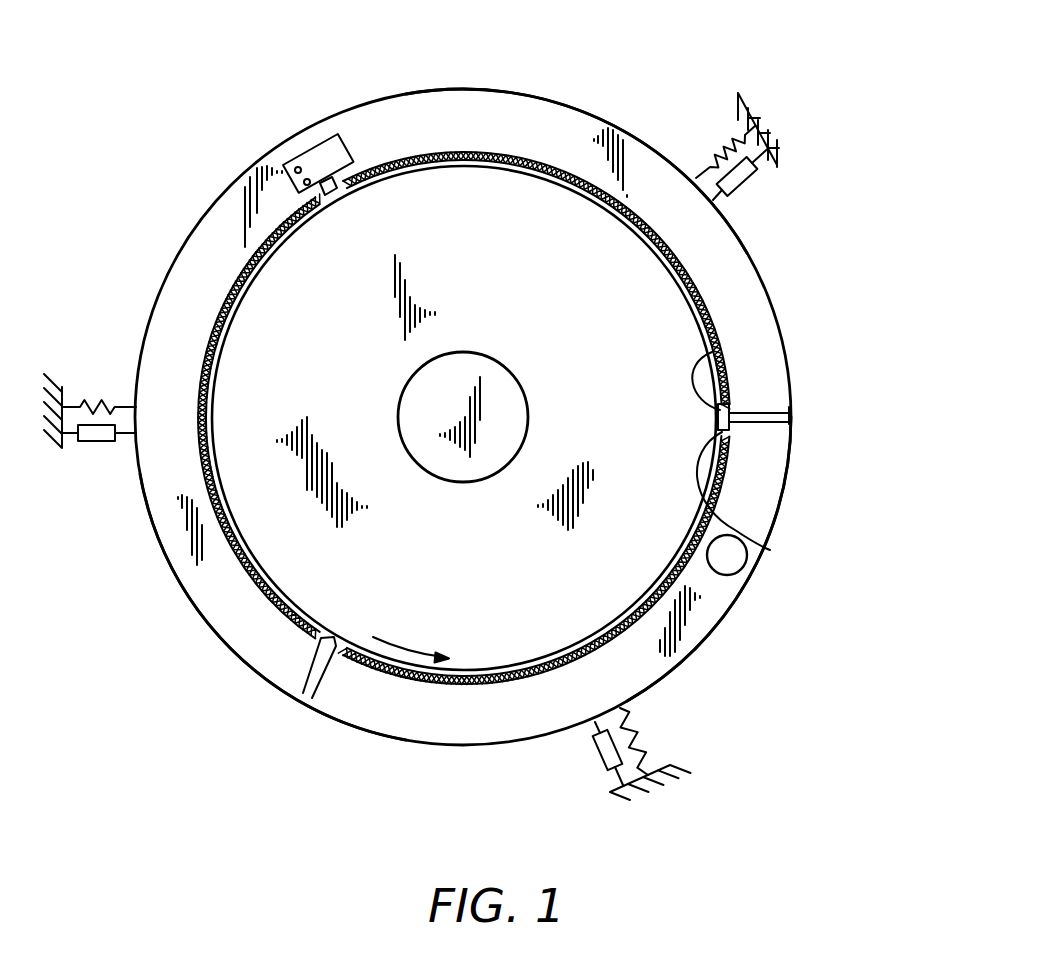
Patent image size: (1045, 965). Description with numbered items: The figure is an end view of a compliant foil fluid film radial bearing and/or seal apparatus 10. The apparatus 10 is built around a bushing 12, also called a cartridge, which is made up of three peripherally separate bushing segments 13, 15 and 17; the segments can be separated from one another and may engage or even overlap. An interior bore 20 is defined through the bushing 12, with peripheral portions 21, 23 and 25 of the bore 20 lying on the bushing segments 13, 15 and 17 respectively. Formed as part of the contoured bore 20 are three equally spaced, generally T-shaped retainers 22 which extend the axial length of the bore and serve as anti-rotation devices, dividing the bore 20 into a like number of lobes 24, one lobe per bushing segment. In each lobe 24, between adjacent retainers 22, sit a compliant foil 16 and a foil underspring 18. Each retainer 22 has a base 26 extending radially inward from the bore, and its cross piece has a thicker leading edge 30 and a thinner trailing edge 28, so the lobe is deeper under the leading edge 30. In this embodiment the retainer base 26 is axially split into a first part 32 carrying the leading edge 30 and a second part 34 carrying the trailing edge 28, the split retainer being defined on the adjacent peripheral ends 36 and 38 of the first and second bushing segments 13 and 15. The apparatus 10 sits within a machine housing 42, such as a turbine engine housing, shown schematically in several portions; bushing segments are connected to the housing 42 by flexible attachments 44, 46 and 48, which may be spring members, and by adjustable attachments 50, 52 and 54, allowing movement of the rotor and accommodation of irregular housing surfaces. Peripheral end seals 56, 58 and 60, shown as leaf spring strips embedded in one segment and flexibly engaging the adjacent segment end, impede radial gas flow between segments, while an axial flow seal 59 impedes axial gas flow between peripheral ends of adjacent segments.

The compliant foil fluid film radial bearing and/or seal apparatus 10 is at (153, 90).
The bushing 12 is at (505, 389).
The bushing segment 13 is at (621, 127).
The bushing segment 15 is at (782, 512).
The bushing segment 17 is at (240, 653).
The compliant foil 16 is at (680, 258).
The foil underspring 18 is at (697, 287).
The interior bore 20 is at (453, 476).
The peripheral portion of bore 21 is at (707, 313).
The peripheral portion of bore 23 is at (462, 683).
The peripheral portion of bore 25 is at (225, 305).
The lobe 24 is at (468, 476).
The generally T-shaped retainer 22 is at (811, 430).
The retainer base 26 is at (811, 430).
The trailing edge 28 is at (713, 352).
The leading edge 30 is at (770, 550).
The first part of retainer base 32 is at (745, 433).
The second part of retainer base 34 is at (738, 405).
The peripheral end 36 is at (770, 411).
The peripheral end 38 is at (770, 423).
The machine housing 42 is at (745, 108).
The flexible attachment 44 is at (727, 147).
The flexible attachment 46 is at (638, 740).
The flexible attachment 48 is at (85, 403).
The adjustable attachment 50 is at (738, 178).
The adjustable attachment 52 is at (607, 760).
The adjustable attachment 54 is at (93, 442).
The peripheral end seal 56 is at (791, 417).
The peripheral end seal 58 is at (297, 690).
The axial flow seal 59 is at (334, 156).
The peripheral end seal 60 is at (303, 160).